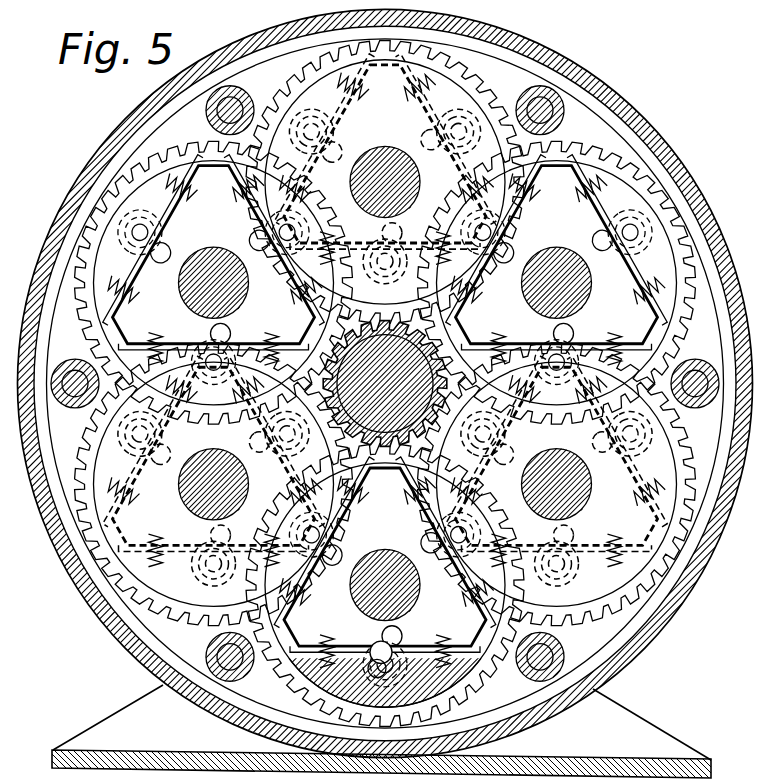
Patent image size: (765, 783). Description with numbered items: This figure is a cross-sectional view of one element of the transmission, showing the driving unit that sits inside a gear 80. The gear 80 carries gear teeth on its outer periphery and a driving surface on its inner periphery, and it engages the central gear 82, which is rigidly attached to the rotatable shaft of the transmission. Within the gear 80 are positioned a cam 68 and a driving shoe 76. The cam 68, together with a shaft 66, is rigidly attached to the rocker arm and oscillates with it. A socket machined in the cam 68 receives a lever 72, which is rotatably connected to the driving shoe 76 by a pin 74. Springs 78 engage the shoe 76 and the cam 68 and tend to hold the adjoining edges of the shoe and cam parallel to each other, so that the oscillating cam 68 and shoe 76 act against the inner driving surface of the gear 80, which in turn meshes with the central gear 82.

The pin 74 is at (368, 383).
The gear 80 is at (377, 383).
The driving shoe 76 is at (213, 284).
The springs 78 is at (213, 260).
The lever 72 is at (213, 272).
The shaft 66 is at (214, 255).
The cam 68 is at (210, 285).
The central gear 82 is at (557, 258).